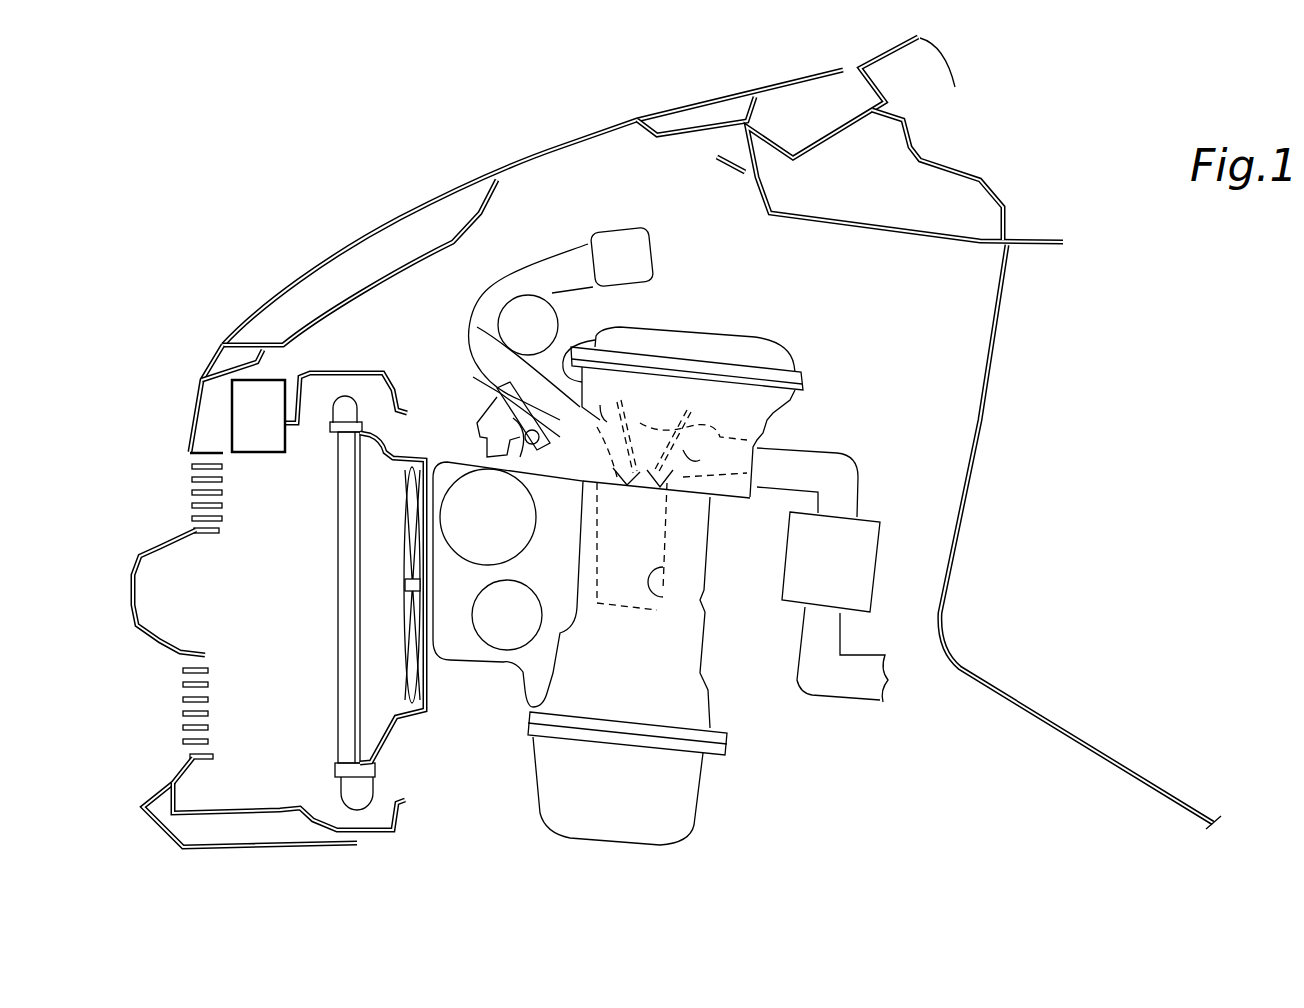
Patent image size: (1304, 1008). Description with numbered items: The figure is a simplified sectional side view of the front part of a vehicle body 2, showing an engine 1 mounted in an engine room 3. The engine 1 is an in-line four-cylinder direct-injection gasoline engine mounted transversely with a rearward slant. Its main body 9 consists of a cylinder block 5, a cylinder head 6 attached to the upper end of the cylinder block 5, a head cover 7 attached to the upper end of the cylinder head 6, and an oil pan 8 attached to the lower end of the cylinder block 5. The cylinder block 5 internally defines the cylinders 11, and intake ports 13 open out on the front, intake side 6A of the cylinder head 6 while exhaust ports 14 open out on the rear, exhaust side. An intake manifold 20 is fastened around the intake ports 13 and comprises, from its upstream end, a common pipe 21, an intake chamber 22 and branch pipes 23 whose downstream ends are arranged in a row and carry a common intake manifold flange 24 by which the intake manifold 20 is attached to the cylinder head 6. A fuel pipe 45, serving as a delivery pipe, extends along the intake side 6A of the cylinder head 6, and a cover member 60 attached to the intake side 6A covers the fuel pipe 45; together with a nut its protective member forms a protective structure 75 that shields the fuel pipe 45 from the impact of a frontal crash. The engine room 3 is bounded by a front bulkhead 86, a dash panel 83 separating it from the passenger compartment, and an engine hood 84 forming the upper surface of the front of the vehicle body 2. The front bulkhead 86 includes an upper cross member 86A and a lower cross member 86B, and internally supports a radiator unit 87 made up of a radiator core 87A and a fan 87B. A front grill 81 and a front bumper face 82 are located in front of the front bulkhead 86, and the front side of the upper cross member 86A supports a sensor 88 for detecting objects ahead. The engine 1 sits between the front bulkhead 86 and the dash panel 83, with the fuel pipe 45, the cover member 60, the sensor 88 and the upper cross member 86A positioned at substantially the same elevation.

The engine 1 is at (647, 496).
The vehicle body 2 is at (645, 468).
The engine room 3 is at (898, 345).
The cylinder block 5 is at (677, 604).
The cylinder head 6 is at (725, 492).
The intake side 6A is at (565, 347).
The head cover 7 is at (693, 335).
The oil pan 8 is at (695, 797).
The main body 9 is at (740, 730).
The cylinder 11 is at (643, 575).
The intake port 13 is at (588, 420).
The exhaust port 14 is at (700, 455).
The intake manifold 20 is at (544, 292).
The common pipe 21 is at (532, 310).
The intake chamber 22 is at (612, 238).
The branch pipe 23 is at (497, 283).
The intake manifold flange 24 is at (480, 330).
The fuel pipe 45 is at (527, 450).
The cover member 60 is at (470, 429).
The protective structure 75 is at (472, 393).
The front grill 81 is at (192, 486).
The front bumper face 82 is at (133, 597).
The dash panel 83 is at (988, 393).
The engine hood 84 is at (436, 200).
The front bulkhead 86 is at (316, 609).
The upper cross member 86A is at (361, 372).
The lower cross member 86B is at (402, 818).
The radiator unit 87 is at (319, 603).
The radiator core 87A is at (345, 582).
The fan 87B is at (408, 641).
The sensor 88 is at (265, 444).